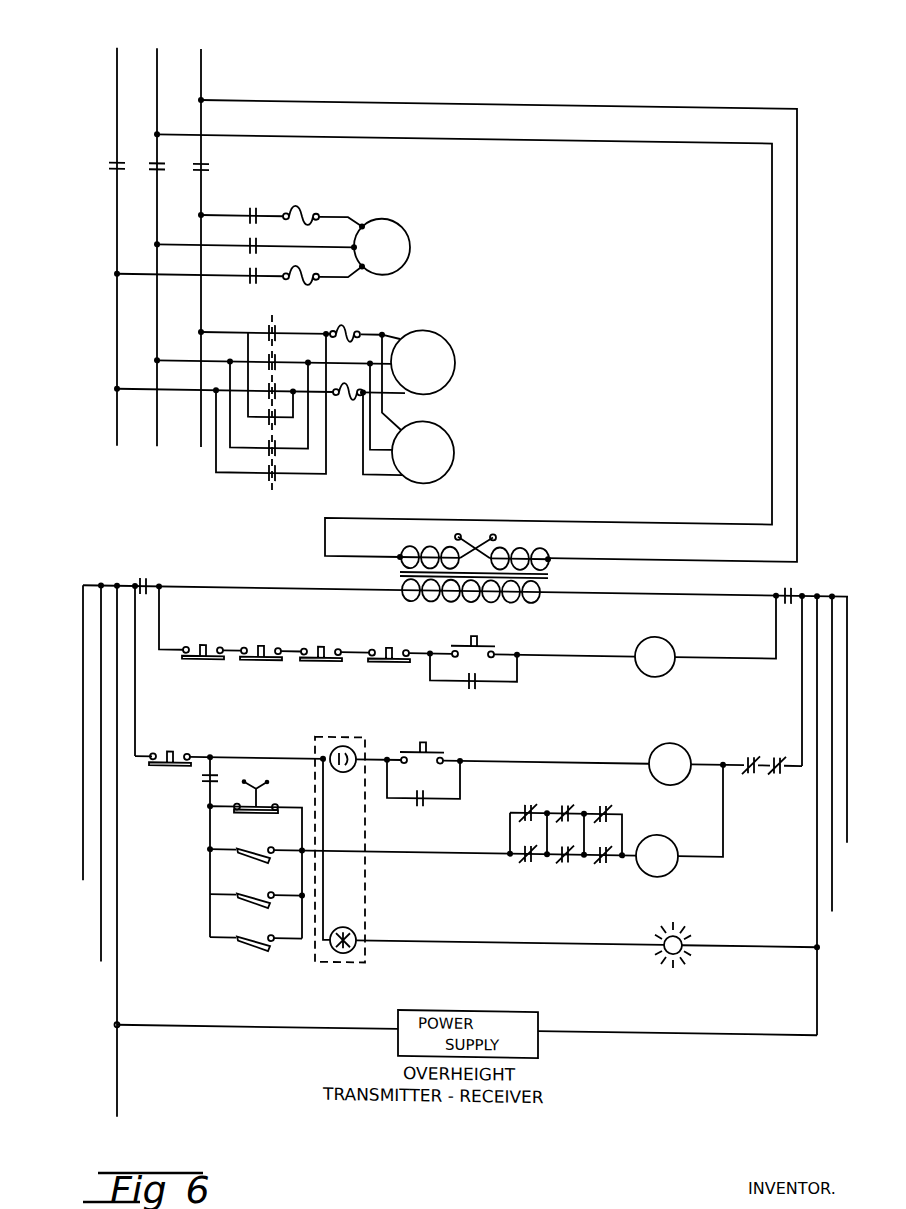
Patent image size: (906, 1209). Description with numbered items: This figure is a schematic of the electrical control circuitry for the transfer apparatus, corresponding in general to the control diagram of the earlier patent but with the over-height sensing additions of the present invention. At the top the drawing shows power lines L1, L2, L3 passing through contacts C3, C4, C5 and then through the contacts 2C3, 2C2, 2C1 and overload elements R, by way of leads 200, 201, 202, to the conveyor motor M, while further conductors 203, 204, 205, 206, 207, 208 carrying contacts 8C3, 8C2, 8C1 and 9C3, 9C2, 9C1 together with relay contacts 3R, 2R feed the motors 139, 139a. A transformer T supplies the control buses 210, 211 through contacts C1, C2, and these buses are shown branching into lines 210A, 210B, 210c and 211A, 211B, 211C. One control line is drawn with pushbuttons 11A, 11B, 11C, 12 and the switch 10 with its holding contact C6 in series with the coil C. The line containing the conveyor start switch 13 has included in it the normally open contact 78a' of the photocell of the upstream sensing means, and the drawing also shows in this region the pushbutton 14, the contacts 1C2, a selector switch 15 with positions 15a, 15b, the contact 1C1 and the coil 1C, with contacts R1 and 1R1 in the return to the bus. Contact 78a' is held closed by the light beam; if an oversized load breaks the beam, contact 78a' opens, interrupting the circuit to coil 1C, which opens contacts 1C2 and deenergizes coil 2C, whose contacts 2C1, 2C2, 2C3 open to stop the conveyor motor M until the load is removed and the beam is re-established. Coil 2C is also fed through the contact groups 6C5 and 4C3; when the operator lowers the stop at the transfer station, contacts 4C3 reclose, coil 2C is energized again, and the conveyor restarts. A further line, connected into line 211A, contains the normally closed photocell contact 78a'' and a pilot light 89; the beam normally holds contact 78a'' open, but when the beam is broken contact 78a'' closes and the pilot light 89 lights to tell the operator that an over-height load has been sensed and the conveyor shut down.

The power supply line L1 is at (117, 64).
The power supply line L2 is at (157, 54).
The power supply line L3 is at (201, 54).
The line contact C3 is at (110, 168).
The line contact C4 is at (150, 163).
The line contact C5 is at (194, 169).
The contact 2C3 is at (256, 206).
The contact 2C2 is at (260, 242).
The contact 2C1 is at (256, 272).
The overload relay heater R is at (308, 215).
The motor lead 200 is at (224, 277).
The motor lead 201 is at (231, 248).
The motor lead 202 is at (231, 215).
The conductor 203 is at (138, 392).
The conductor 204 is at (180, 379).
The conductor 205 is at (224, 350).
The conductor 206 is at (235, 476).
The conductor 207 is at (232, 442).
The conductor 208 is at (295, 405).
The motor M is at (380, 246).
The contactor 8C contact 8C3 is at (284, 330).
The contactor 8C contact 8C2 is at (272, 355).
The contactor 8C contact 8C1 is at (271, 383).
The contactor 9C contact 9C3 is at (282, 422).
The contactor 9C contact 9C2 is at (282, 452).
The contactor 9C contact 9C1 is at (282, 480).
The relay 3R contact 3R is at (350, 330).
The relay 2R contact 2R is at (348, 392).
The motor 139 is at (440, 346).
The motor 139a is at (446, 440).
The transformer T is at (523, 545).
The contact C1 is at (149, 581).
The contact C2 is at (794, 587).
The control bus conductor 210 is at (308, 591).
The control bus conductor 211 is at (708, 591).
The bus conductor 210A is at (117, 998).
The bus conductor 210B is at (101, 926).
The bus conductor 210c is at (83, 848).
The line 211A is at (817, 995).
The bus conductor 211B is at (832, 868).
The bus conductor 211C is at (847, 833).
The push button switch 11A is at (199, 642).
The push button switch 11B is at (260, 642).
The push button switch 11C is at (323, 640).
The push button switch 12 is at (390, 642).
The start switch 10 is at (473, 633).
The holding contact C6 is at (478, 694).
The control relay coil C is at (677, 644).
The push button switch 14 is at (174, 747).
The contacts 1C2 is at (203, 777).
The selector switch 15 is at (268, 803).
The selector switch contact 15a is at (242, 781).
The selector switch contact 15b is at (269, 781).
The normally open photocell contact 78a' is at (355, 738).
The normally closed photocell contact 78a'' is at (341, 967).
The conveyor start switch 13 is at (426, 745).
The relay 1C contact 1C1 is at (417, 802).
The coil 1C is at (669, 746).
The relay contact R1 is at (744, 753).
The relay contact 1R1 is at (776, 778).
The contactor 6C contacts 6C5 is at (616, 782).
The contacts 4C3 is at (604, 883).
The coil 2C is at (664, 844).
The pilot light 89 is at (655, 955).